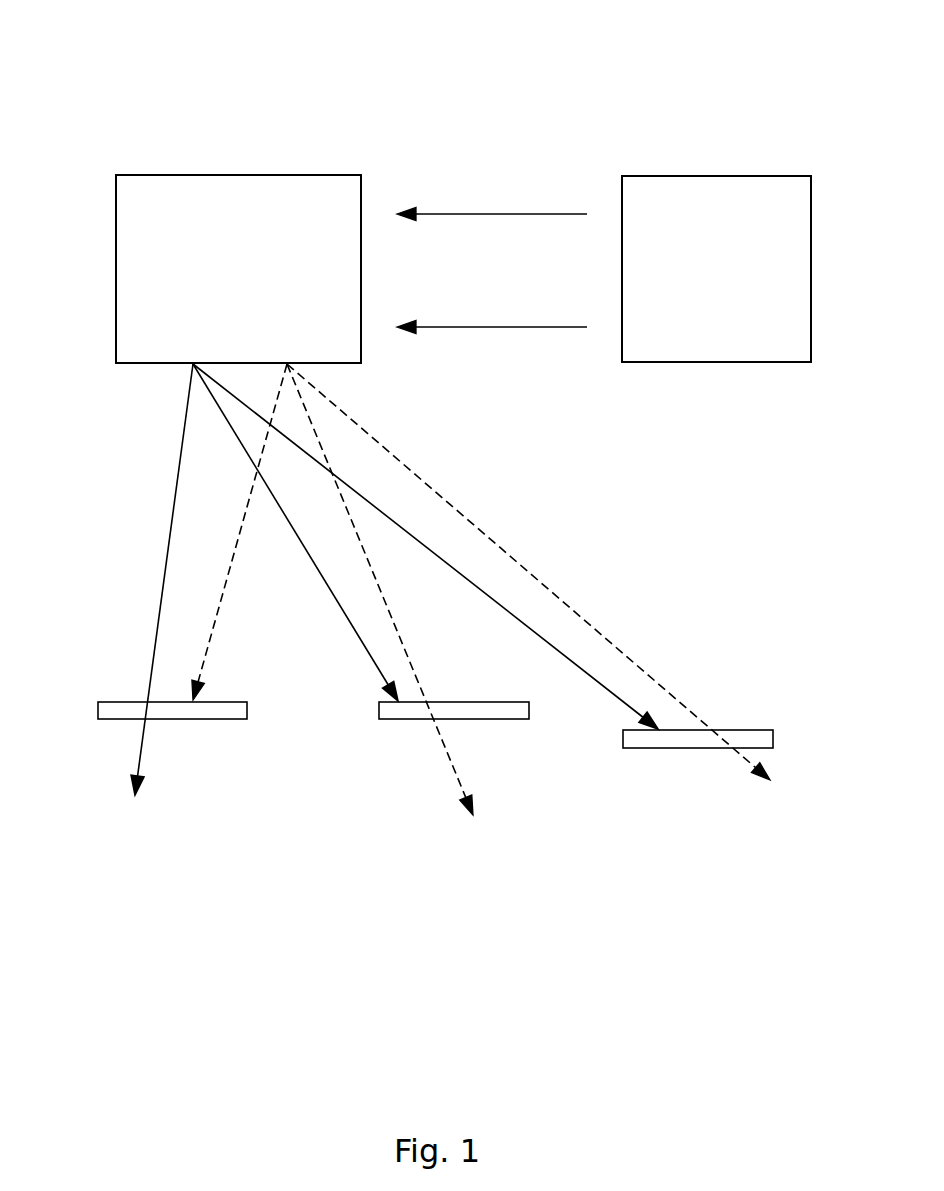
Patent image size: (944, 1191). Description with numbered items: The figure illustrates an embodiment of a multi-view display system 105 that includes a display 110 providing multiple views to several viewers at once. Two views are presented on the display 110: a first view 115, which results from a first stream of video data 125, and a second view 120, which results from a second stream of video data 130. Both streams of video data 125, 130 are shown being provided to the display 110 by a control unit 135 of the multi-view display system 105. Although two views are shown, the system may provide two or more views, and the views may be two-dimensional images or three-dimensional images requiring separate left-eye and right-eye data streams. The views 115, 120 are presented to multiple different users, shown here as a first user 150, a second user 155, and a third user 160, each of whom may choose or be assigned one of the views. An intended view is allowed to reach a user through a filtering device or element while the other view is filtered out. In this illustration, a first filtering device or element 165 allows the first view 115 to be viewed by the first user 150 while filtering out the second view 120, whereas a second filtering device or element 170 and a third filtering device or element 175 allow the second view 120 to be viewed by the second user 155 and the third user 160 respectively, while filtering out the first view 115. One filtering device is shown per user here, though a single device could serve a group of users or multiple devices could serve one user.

The multi-view display system 105 is at (472, 27).
The display 110 is at (238, 253).
The first view 115 is at (180, 278).
The second view 120 is at (280, 278).
The first stream of video data 125 is at (492, 201).
The second stream of video data 130 is at (492, 314).
The control unit 135 is at (716, 249).
The first user 150 is at (173, 850).
The second user 155 is at (473, 850).
The third user 160 is at (774, 832).
The first filtering device or element 165 is at (144, 724).
The second filtering device or element 170 is at (429, 726).
The third filtering device or element 175 is at (735, 732).